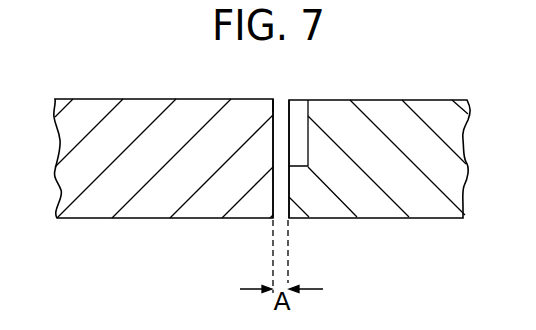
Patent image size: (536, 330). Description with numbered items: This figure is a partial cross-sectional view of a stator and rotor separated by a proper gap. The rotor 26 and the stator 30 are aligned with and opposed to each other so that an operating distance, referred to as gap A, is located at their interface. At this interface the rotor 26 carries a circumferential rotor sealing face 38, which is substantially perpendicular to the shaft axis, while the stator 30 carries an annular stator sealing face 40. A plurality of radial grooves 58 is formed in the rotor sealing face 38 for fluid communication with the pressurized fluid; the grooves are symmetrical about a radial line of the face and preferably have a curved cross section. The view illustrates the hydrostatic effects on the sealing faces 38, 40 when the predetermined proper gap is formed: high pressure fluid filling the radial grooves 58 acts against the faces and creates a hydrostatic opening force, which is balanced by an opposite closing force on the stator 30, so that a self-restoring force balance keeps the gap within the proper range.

The rotor 26 is at (383, 218).
The stator 30 is at (178, 218).
The rotor sealing face 38 is at (290, 191).
The stator sealing face 40 is at (274, 108).
The radial grooves 58 is at (297, 112).